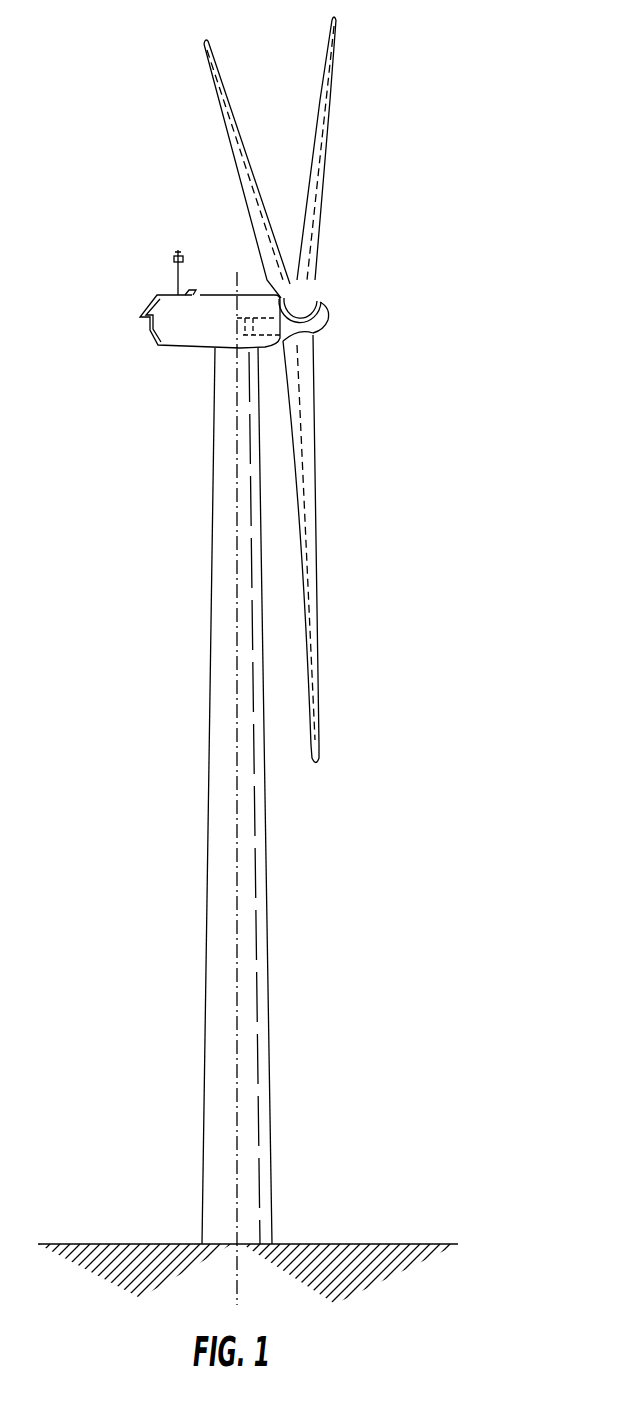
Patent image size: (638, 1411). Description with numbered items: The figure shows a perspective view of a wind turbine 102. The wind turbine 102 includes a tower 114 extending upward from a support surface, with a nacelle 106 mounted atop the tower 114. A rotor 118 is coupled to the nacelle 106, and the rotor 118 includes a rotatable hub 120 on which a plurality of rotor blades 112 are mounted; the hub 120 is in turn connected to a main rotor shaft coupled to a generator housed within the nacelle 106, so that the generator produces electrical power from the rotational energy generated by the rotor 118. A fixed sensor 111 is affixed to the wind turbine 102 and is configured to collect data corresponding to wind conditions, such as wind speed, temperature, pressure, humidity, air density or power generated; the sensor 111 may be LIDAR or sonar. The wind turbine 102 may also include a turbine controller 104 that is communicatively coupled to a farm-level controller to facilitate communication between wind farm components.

The wind turbine 102 is at (480, 114).
The turbine controller 104 is at (263, 318).
The nacelle 106 is at (184, 350).
The sensor 111 is at (173, 282).
The rotor blades 112 is at (315, 137).
The tower 114 is at (207, 925).
The rotor 118 is at (352, 290).
The rotatable hub 120 is at (328, 317).